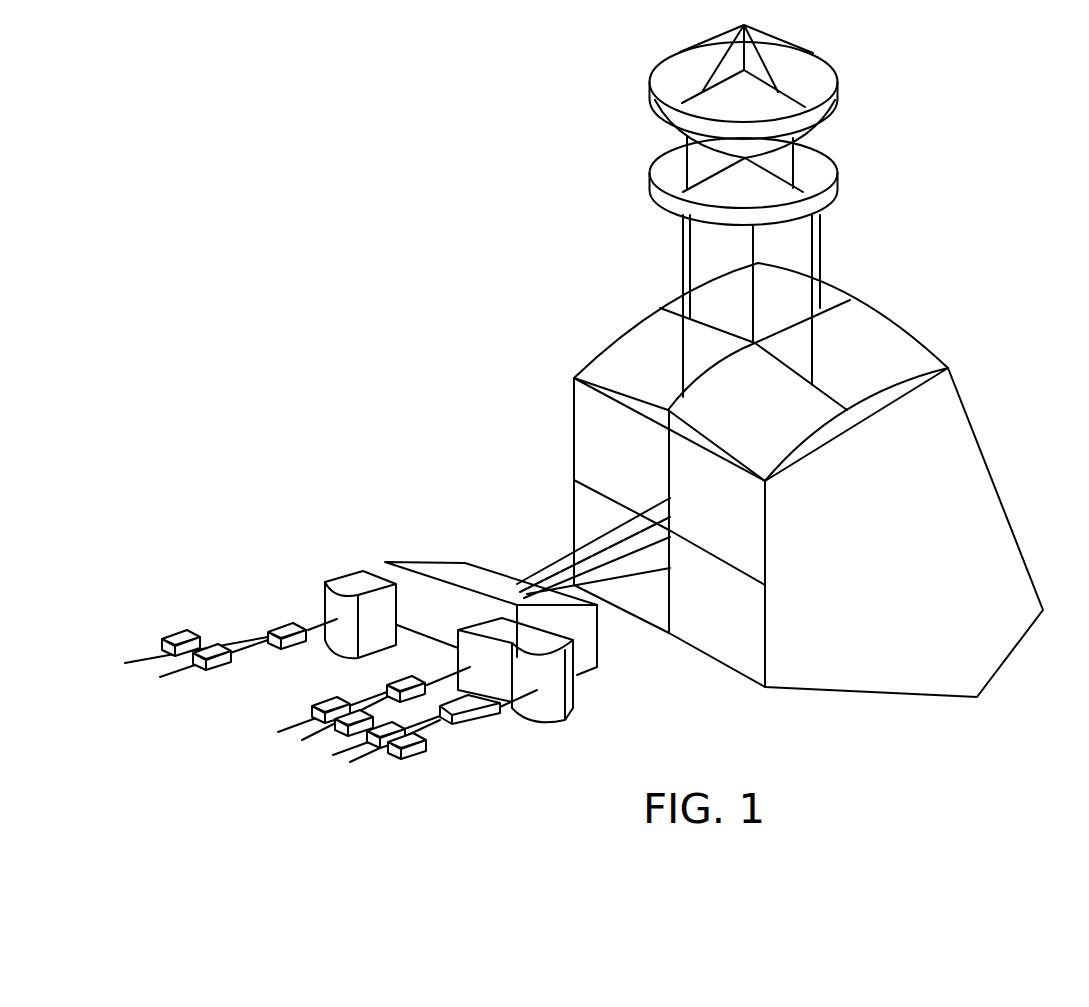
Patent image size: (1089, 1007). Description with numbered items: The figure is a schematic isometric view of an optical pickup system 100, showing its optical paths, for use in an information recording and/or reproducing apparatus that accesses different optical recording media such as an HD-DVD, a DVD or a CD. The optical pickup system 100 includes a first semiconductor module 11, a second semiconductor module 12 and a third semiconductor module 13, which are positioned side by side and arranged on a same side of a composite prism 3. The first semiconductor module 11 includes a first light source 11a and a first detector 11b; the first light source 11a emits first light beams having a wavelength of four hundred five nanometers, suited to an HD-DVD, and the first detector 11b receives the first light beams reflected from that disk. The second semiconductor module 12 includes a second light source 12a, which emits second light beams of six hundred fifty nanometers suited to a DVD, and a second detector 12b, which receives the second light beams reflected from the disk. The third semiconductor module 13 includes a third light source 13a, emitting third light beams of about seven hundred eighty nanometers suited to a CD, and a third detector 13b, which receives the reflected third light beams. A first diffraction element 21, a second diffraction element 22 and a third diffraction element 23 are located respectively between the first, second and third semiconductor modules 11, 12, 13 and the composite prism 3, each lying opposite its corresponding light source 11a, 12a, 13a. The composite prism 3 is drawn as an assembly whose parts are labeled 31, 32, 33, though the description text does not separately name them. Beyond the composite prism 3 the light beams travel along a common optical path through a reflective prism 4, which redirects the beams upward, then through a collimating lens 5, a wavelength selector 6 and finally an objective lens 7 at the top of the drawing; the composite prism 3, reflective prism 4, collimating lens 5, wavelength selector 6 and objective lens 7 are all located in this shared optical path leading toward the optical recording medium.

The optical pickup system 100 is at (432, 105).
The objective lens 7 is at (802, 72).
The wavelength selector 6 is at (812, 157).
The collimating lens 5 is at (887, 352).
The reflective prism 4 is at (960, 455).
The composite prism 3 is at (522, 490).
The first transmitter unit 31 is at (533, 640).
The second transmitter unit 32 is at (355, 582).
The third transmitter unit 33 is at (435, 568).
The first diffraction element 21 is at (400, 682).
The second diffraction element 22 is at (463, 718).
The third diffraction element 23 is at (285, 628).
The first semiconductor module 11 is at (203, 735).
The first light source 11a is at (330, 712).
The first detector 11b is at (352, 730).
The second semiconductor module 12 is at (418, 822).
The second light source 12a is at (377, 740).
The second detector 12b is at (417, 753).
The third semiconductor module 13 is at (223, 568).
The third light source 13a is at (213, 648).
The third detector 13b is at (177, 638).